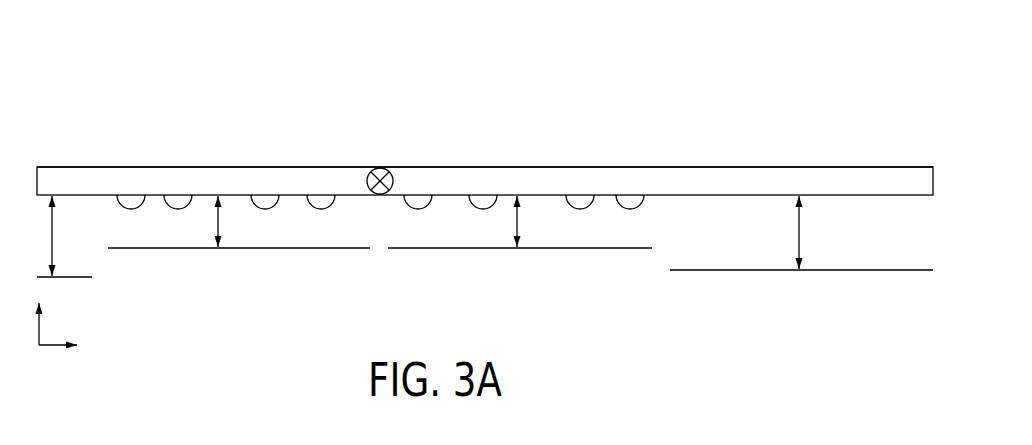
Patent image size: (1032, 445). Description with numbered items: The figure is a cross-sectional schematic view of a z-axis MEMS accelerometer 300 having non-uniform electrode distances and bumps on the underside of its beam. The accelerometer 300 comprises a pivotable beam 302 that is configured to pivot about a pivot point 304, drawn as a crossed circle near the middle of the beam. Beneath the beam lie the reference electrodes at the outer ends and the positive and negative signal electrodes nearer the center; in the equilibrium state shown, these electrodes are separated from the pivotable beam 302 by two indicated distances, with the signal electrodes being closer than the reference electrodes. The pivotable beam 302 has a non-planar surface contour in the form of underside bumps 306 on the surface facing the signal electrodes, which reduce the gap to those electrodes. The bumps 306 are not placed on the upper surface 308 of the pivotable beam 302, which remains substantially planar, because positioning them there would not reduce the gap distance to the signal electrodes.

The z-axis MEMS accelerometer 300 is at (800, 97).
The pivotable beam 302 is at (185, 165).
The pivot point 304 is at (372, 170).
The underside bumps 306 is at (167, 212).
The upper surface 308 is at (76, 163).